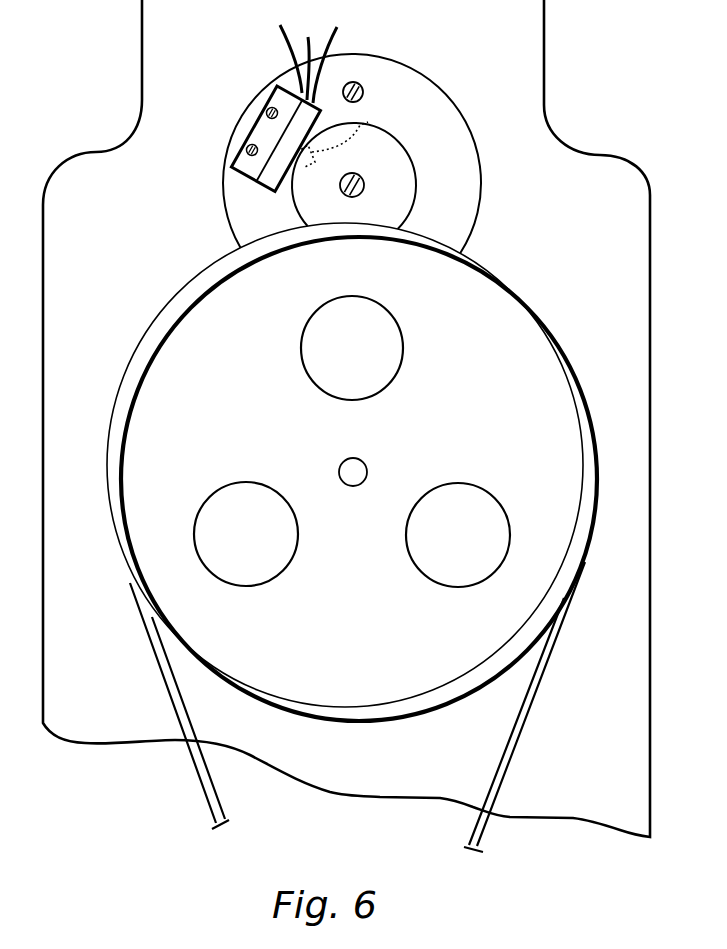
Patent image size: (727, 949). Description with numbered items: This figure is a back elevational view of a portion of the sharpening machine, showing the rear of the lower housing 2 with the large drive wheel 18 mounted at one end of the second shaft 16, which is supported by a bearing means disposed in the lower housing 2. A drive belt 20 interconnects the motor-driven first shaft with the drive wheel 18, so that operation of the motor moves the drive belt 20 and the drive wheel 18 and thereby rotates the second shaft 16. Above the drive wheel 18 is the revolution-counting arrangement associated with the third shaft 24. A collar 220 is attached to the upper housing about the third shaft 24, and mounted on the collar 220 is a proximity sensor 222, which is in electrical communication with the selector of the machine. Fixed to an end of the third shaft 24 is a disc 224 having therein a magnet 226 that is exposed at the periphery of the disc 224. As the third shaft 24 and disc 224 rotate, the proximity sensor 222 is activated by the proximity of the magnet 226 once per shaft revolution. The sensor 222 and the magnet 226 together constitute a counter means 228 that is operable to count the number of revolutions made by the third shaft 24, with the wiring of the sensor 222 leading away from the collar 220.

The lower housing 2 is at (650, 311).
The second shaft 16 is at (359, 466).
The drive wheel 18 is at (573, 499).
The drive belt 20 is at (526, 723).
The third shaft 24 is at (410, 155).
The collar 220 is at (470, 204).
The proximity sensor 222 is at (256, 133).
The disc 224 is at (402, 204).
The magnet 226 is at (358, 137).
The counter means 228 is at (259, 88).